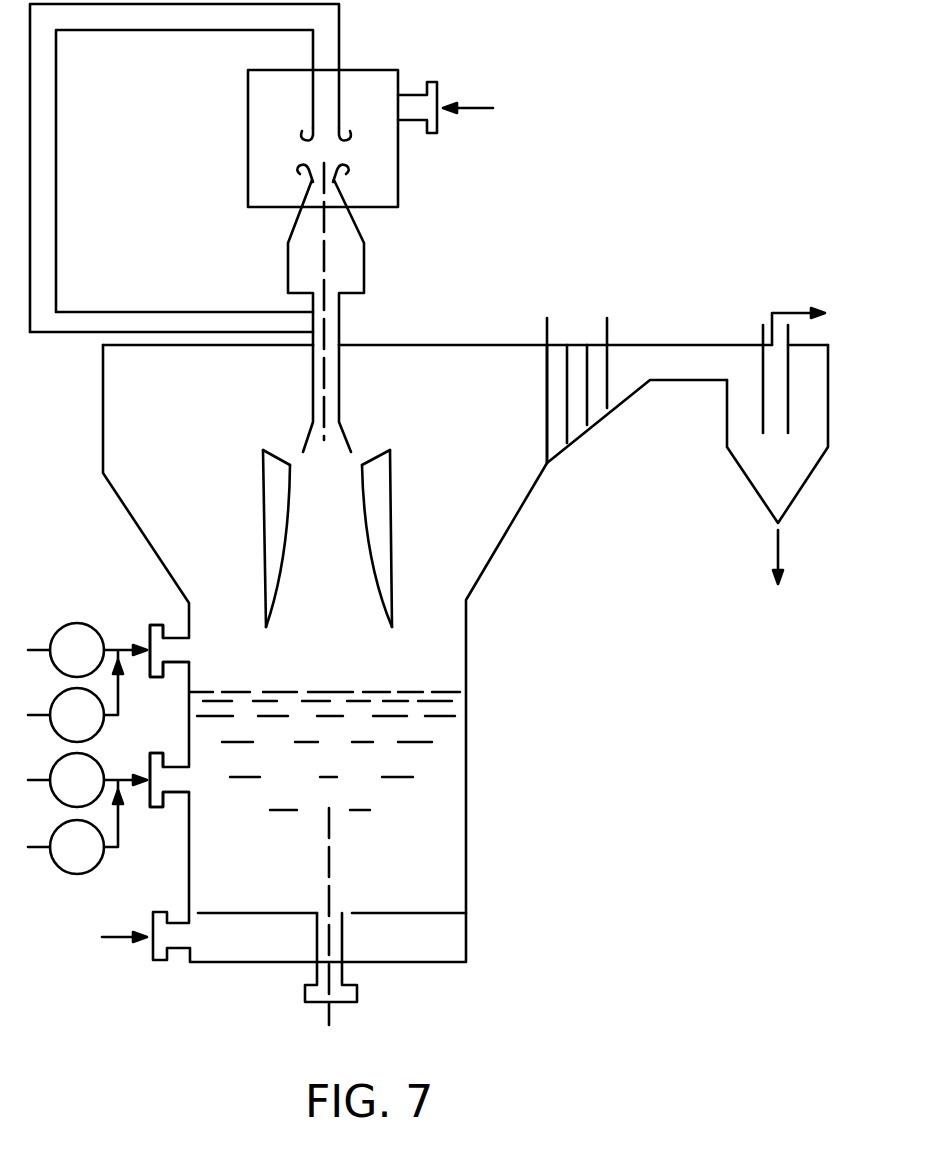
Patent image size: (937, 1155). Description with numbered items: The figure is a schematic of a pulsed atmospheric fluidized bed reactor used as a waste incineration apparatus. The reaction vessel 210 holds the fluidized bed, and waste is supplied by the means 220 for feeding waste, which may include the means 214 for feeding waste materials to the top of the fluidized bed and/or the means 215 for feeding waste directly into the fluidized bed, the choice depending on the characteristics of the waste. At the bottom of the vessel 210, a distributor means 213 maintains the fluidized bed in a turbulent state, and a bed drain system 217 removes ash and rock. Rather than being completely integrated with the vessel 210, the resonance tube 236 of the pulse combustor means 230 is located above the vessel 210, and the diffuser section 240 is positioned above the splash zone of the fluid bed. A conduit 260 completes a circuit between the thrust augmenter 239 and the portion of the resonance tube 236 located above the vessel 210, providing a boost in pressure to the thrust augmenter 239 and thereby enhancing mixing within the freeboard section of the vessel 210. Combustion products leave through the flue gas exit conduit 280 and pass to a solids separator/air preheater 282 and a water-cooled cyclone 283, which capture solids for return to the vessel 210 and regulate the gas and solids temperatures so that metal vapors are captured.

The vessel 210 is at (492, 560).
The distributor means 213 is at (448, 915).
The means for feeding the waste materials to the top of the fluidized bed 214 is at (177, 664).
The means for feeding waste directly into the fluidized bed 215 is at (177, 794).
The bed drain system 217 is at (342, 977).
The means for feeding waste 220 is at (138, 622).
The pulse combustor means 230 is at (378, 296).
The resonance tube 236 is at (340, 383).
The thrust augmenter 239 is at (339, 128).
The diffuser section 240 is at (392, 532).
The conduit 260 is at (56, 145).
The flue gas exit conduit 280 is at (648, 345).
The solids separator/air preheater 282 is at (587, 425).
The water-cooled cyclone 283 is at (790, 463).